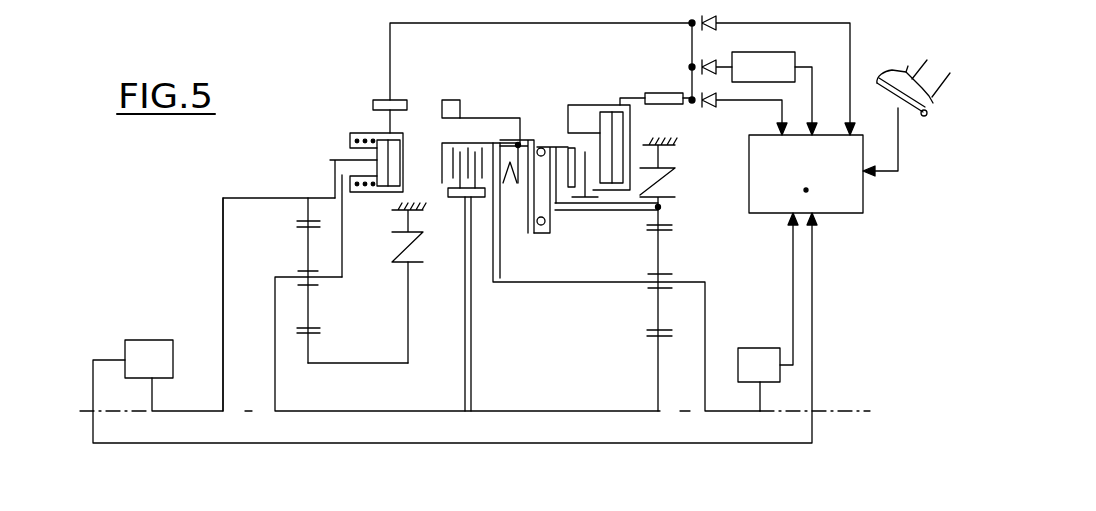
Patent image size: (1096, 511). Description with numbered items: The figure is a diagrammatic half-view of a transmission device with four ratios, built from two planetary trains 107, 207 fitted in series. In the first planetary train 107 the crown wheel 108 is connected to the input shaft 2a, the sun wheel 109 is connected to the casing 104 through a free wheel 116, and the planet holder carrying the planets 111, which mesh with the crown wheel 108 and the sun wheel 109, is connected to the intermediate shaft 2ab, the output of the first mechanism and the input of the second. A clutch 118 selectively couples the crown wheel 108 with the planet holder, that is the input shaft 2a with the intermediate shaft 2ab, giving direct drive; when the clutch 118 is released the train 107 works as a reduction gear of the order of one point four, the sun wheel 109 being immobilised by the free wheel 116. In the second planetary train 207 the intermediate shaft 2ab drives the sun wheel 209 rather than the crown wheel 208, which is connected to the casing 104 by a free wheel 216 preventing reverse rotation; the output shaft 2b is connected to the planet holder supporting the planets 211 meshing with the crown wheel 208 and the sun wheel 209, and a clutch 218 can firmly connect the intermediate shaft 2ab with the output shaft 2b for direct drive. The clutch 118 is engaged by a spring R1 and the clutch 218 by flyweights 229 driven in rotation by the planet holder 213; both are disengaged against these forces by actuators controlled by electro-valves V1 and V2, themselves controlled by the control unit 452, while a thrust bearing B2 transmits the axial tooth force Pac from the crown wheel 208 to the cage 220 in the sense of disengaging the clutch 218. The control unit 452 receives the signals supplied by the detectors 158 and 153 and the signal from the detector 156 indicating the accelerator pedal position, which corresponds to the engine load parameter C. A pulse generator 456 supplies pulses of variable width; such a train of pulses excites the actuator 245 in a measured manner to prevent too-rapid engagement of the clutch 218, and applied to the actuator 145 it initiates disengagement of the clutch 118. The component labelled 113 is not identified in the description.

The input shaft 2a is at (198, 411).
The output shaft 2b is at (720, 411).
The intermediate shaft 2ab is at (333, 411).
The casing 104 is at (393, 209).
The planetary train 107 is at (330, 288).
The crown wheel 108 is at (297, 213).
The sun wheel 109 is at (312, 346).
The planets 111 is at (306, 246).
The casing 113 is at (276, 303).
The free wheel 116 is at (393, 257).
The clutch 118 is at (340, 182).
The actuator 145 is at (404, 162).
The detector 153 is at (782, 373).
The detector 156 is at (917, 135).
The detector 158 is at (147, 340).
The second planetary train 207 is at (665, 265).
The crown wheel 208 is at (660, 209).
The sun wheel 209 is at (660, 354).
The planets 211 is at (676, 243).
The planet holder 213 is at (708, 291).
The free wheel 216 is at (672, 175).
The clutch 218 is at (474, 114).
The cage 220 is at (521, 140).
The flyweights 229 is at (447, 100).
The actuator 245 is at (633, 121).
The control unit 452 is at (806, 174).
The pulse generator 456 is at (763, 67).
The thrust bearing B2 is at (541, 230).
The load parameter C is at (881, 191).
The axial tooth force Pac is at (610, 217).
The spring R1 is at (350, 142).
The electro-valve V1 is at (374, 98).
The electro-valve V2 is at (657, 92).